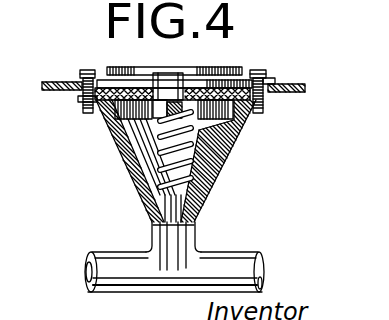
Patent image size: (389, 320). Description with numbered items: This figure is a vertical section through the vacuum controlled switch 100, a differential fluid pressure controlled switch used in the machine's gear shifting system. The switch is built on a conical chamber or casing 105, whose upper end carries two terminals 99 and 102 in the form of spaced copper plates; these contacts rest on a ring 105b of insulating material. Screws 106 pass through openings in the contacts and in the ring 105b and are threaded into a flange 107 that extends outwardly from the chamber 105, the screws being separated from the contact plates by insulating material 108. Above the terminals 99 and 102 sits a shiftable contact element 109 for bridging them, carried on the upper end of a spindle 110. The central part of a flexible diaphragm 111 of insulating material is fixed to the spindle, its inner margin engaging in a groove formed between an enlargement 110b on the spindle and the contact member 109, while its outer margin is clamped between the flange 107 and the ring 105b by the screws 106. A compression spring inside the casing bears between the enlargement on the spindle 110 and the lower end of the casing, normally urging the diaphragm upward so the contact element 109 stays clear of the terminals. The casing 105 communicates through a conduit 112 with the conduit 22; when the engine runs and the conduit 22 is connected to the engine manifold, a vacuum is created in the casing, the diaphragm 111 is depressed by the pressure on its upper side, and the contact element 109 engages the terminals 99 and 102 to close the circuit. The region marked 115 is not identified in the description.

The conduit 22 is at (117, 275).
The terminal 99 is at (288, 85).
The vacuum controlled switch 100 is at (177, 141).
The terminal 102 is at (50, 82).
The conical chamber 105 is at (111, 137).
The ring 105b is at (107, 86).
The screws 106 is at (83, 72).
The flange 107 is at (77, 101).
The insulating material 108 is at (272, 81).
The shiftable contact element 109 is at (183, 71).
The spindle 110 is at (236, 130).
The enlargement 110b is at (170, 91).
The flexible diaphragm 111 is at (238, 80).
The conduit 112 is at (178, 227).
The wedge insert 115 is at (211, 183).